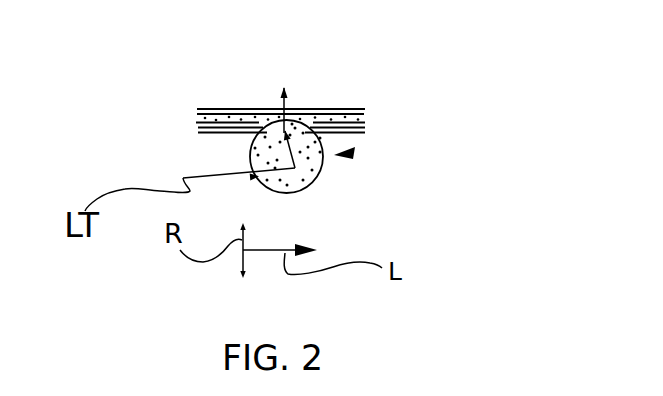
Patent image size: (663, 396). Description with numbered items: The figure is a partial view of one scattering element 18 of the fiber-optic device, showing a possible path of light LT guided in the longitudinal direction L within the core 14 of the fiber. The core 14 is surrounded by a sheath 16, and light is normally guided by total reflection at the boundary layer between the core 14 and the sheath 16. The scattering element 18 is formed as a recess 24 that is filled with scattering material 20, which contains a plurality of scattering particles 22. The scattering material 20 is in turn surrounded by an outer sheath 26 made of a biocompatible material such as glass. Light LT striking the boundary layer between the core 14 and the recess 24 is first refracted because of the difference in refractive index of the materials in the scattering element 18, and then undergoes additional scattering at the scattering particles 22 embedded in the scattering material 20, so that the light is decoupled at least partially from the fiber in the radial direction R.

The central core 14 is at (370, 198).
The sheath 16 is at (365, 128).
The scattering element 18 is at (354, 153).
The scattering material 20 is at (365, 120).
The scattering particles 22 is at (252, 156).
The recess 24 is at (305, 188).
The outer sheath 26 is at (354, 114).